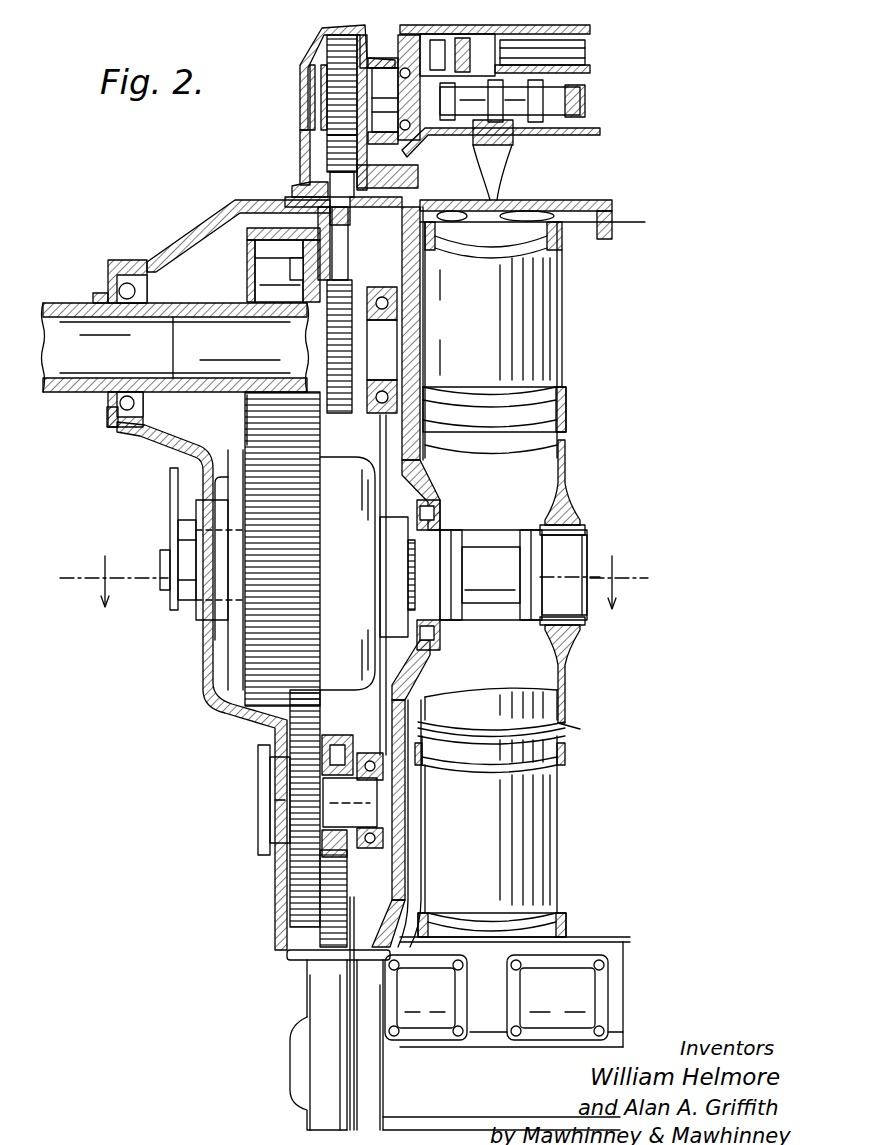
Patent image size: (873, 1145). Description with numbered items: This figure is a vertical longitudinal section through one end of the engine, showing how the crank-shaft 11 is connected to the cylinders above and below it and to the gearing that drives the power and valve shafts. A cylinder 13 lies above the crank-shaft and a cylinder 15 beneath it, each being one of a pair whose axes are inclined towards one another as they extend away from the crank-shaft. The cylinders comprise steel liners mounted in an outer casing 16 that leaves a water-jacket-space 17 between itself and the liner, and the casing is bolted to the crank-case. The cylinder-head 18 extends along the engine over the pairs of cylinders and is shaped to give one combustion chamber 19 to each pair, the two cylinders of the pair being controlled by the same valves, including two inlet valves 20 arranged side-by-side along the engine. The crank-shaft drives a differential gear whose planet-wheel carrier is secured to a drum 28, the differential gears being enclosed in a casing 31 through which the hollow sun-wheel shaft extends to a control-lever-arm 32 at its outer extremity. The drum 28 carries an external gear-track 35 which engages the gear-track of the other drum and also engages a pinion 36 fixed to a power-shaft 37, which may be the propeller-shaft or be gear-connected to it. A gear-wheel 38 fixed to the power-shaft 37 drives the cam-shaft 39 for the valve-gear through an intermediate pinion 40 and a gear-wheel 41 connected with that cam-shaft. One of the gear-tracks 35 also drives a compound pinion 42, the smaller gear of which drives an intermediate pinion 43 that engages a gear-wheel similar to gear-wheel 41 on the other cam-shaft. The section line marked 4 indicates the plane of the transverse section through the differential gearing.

The section line 4- 4 is at (354, 580).
The crank-shaft 11 is at (484, 556).
The cylinder 13 is at (530, 350).
The cylinder 15 is at (532, 846).
The outer casing 16 is at (410, 333).
The water-jacket-space 17 is at (413, 364).
The cylinder-head 18 is at (556, 210).
The combustion chamber 19 is at (496, 207).
The inlet valves 20 is at (525, 222).
The drum 28 is at (342, 682).
The casing 31 is at (203, 627).
The control-lever-arm 32 is at (176, 481).
The gear-track 35 is at (303, 625).
The pinion 36 is at (256, 272).
The power-shaft 37 is at (84, 388).
The gear-wheel 38 is at (335, 415).
The cam-shaft 39 is at (586, 105).
The intermediate pinion 40 is at (330, 170).
The gear-wheel 41 is at (326, 148).
The compound pinion 42 is at (300, 716).
The intermediate pinion 43 is at (300, 880).